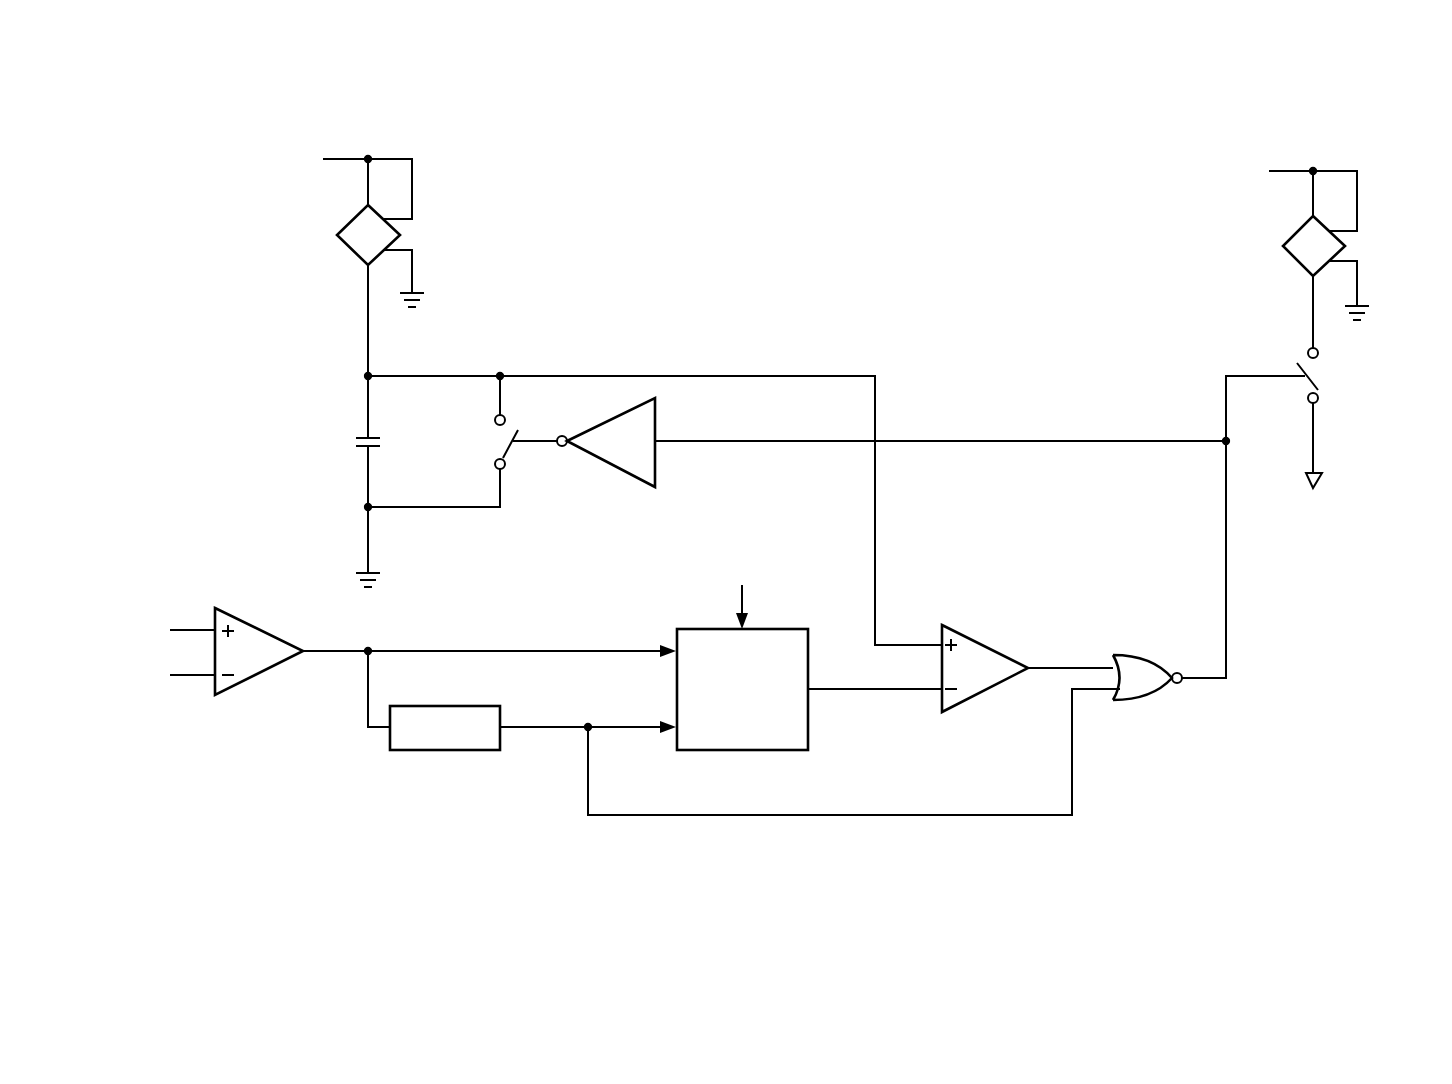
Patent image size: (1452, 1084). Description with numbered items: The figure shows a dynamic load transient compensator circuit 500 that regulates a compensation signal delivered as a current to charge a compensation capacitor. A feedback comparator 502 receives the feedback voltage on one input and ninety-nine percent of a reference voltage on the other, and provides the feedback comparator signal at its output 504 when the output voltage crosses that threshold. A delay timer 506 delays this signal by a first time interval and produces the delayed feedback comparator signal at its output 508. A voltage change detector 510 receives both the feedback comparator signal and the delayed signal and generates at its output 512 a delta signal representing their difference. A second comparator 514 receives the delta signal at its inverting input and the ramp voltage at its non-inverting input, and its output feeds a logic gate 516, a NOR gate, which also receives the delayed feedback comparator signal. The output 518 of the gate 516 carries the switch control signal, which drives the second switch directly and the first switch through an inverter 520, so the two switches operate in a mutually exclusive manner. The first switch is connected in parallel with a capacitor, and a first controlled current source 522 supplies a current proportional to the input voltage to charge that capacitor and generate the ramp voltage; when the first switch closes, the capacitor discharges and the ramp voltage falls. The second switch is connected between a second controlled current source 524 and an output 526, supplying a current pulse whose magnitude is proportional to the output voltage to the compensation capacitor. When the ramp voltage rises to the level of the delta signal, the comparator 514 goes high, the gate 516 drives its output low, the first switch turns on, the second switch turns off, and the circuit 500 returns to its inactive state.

The dynamic load transient compensator circuit 500 is at (196, 185).
The feedback comparator 502 is at (260, 673).
The output of the feedback comparator 504 is at (522, 648).
The delay timer 506 is at (445, 752).
The output of the delay timer 508 is at (545, 733).
The voltage change detector 510 is at (742, 752).
The output of the voltage change detector 512 is at (875, 693).
The second comparator 514 is at (985, 695).
The logic gate 516 is at (1135, 705).
The output of the logic gate 518 is at (1226, 585).
The inverter 520 is at (607, 466).
The first controlled current source 522 is at (352, 253).
The second controlled current source 524 is at (1298, 263).
The output 526 is at (1315, 442).